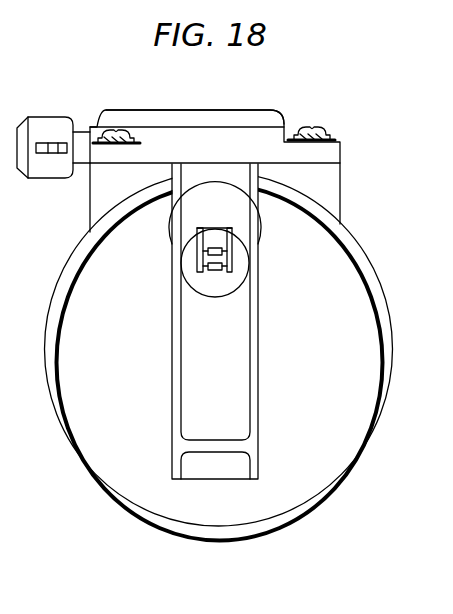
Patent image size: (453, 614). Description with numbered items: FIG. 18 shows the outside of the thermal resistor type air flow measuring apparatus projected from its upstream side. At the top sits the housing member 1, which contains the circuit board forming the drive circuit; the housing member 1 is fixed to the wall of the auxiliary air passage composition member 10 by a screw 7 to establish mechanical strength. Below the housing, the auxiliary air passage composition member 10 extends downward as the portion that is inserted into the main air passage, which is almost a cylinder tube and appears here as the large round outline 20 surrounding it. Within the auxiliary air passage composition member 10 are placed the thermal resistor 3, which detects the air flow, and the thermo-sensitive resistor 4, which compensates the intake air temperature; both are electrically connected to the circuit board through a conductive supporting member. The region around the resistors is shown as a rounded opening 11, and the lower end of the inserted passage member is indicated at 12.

The housing member 1 is at (234, 108).
The thermal resistor 3 is at (215, 247).
The thermo-sensitive resistor 4 is at (207, 270).
The screw 7 is at (107, 128).
The auxiliary air passage composition member 10 is at (263, 405).
The element holder 11 is at (233, 270).
The base portion 12 is at (210, 490).
The casing ring 20 is at (384, 297).